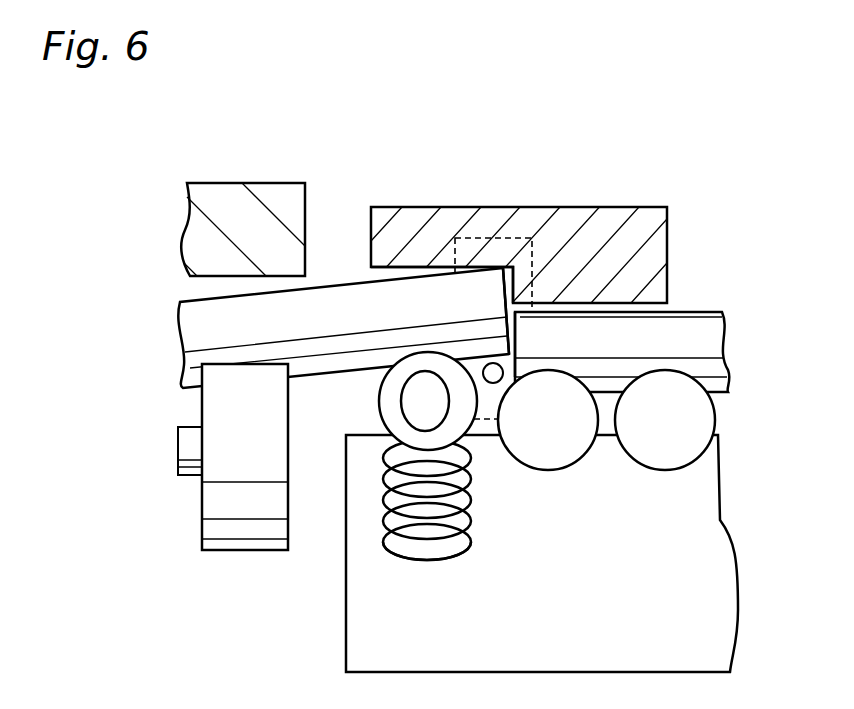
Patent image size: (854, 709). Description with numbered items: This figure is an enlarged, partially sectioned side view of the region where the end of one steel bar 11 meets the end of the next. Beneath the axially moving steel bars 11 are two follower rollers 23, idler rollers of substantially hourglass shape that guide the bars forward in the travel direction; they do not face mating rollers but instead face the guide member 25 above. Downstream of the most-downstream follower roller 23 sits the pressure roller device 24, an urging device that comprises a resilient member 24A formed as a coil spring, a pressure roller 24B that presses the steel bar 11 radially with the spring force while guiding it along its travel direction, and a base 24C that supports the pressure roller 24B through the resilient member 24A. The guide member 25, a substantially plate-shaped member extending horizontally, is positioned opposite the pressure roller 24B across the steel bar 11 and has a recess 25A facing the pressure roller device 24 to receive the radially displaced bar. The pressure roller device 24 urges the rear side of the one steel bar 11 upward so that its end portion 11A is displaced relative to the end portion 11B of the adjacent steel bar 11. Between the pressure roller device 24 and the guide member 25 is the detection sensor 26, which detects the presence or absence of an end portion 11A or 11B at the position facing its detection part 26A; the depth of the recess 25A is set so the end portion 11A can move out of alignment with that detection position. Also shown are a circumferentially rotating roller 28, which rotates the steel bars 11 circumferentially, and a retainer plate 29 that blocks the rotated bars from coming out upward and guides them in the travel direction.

The steel bar 11 is at (333, 300).
The end portion of the one steel bar 11A is at (488, 293).
The end portion of the another steel bar 11B is at (543, 322).
The follower roller 23 is at (690, 417).
The pressure roller device 24 is at (380, 475).
The resilient member 24A is at (402, 545).
The pressure roller 24B is at (400, 422).
The base 24C is at (378, 632).
The guide member 25 is at (640, 232).
The recess 25A is at (388, 273).
The detection sensor 26 is at (477, 237).
The detection part 26A is at (473, 375).
The circumferentially rotating roller 28 is at (229, 528).
The retainer plate 29 is at (197, 227).